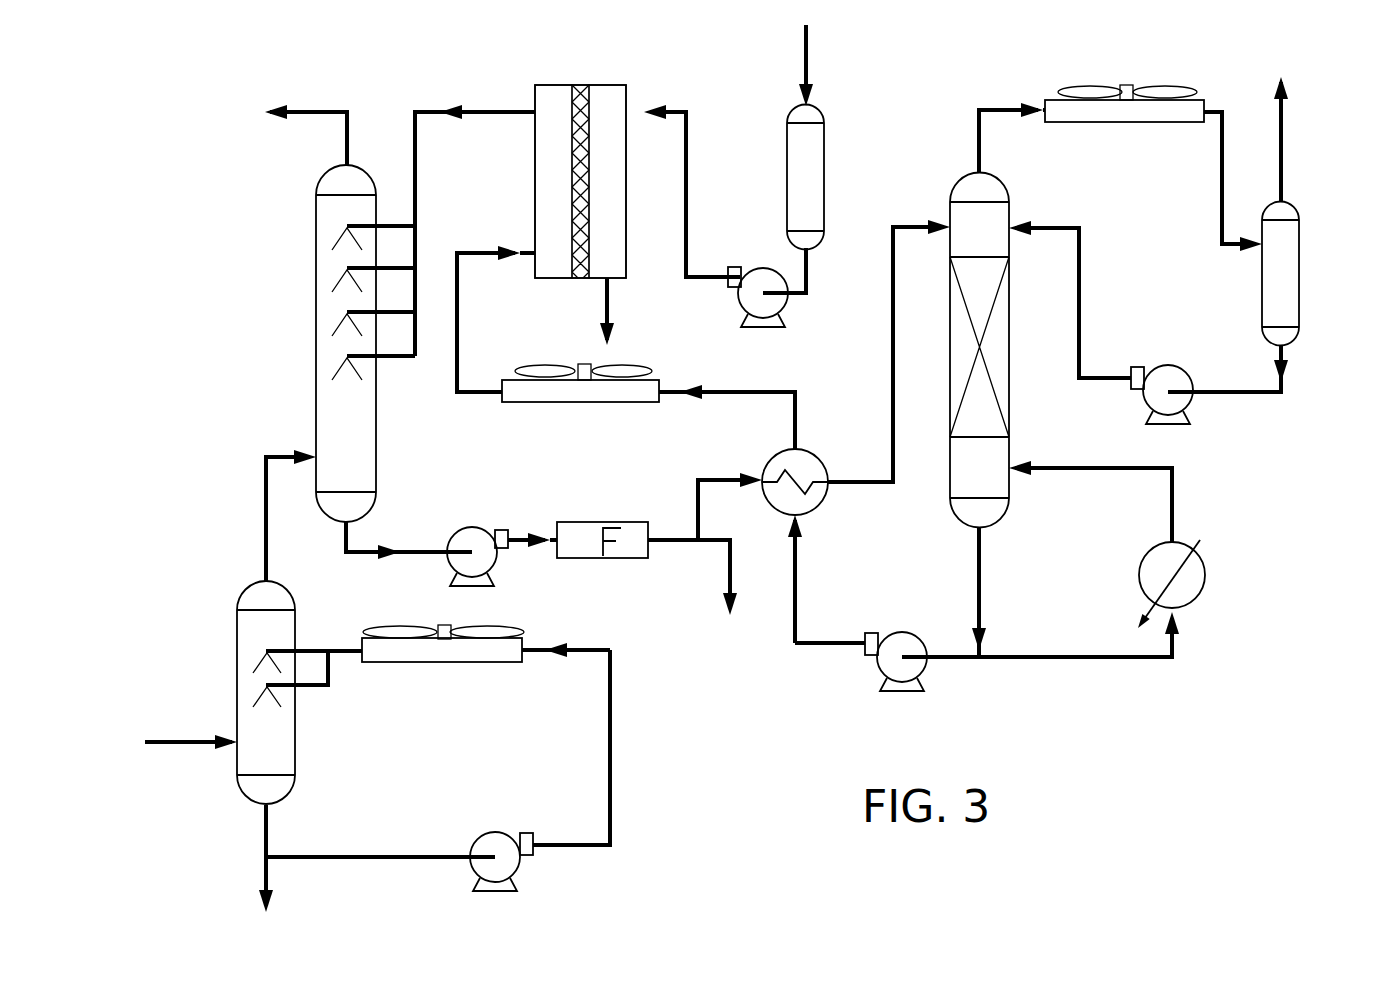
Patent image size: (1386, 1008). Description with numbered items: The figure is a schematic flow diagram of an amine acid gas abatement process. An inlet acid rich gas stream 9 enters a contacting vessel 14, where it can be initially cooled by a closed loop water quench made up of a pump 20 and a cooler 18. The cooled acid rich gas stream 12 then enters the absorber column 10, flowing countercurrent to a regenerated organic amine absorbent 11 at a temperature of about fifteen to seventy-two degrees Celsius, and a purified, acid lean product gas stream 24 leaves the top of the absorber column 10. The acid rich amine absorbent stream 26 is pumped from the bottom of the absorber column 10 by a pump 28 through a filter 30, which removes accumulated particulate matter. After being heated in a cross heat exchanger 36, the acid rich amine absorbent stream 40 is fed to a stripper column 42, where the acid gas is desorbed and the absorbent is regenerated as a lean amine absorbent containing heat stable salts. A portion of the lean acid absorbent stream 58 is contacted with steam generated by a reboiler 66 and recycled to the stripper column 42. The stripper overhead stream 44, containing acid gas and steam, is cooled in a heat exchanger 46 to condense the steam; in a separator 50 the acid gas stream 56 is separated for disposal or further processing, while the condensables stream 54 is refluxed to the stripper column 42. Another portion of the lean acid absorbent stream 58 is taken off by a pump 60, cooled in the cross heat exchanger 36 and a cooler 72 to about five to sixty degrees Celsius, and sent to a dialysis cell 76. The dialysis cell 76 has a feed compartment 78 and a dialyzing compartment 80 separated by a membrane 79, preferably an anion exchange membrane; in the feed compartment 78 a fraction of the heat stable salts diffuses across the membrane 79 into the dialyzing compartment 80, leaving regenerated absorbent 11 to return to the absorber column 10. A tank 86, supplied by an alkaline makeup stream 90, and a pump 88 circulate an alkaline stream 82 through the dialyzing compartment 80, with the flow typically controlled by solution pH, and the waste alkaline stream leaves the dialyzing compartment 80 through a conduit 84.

The inlet acid rich gas stream 9 is at (158, 738).
The absorber column 10 is at (315, 295).
The regenerated organic amine absorbent 11 is at (487, 110).
The acid rich gas stream 12 is at (267, 510).
The contacting vessel 14 is at (288, 737).
The cooler 18 is at (443, 663).
The pump 20 is at (490, 832).
The acid lean product gas stream 24 is at (330, 110).
The acid rich amine absorbent stream 26 is at (393, 538).
The pump 28 is at (468, 528).
The filter 30 is at (622, 560).
The cross heat exchanger 36 is at (770, 458).
The acid rich amine absorbent stream 40 is at (892, 272).
The stripper column 42 is at (956, 372).
The stripper overhead stream 44 is at (983, 133).
The heat exchanger 46 is at (1165, 118).
The separator 50 is at (1302, 297).
The condensables stream 54 is at (1078, 297).
The acid gas stream 56 is at (1285, 170).
The lean acid absorbent stream 58 is at (982, 550).
The pump 60 is at (878, 668).
The reboiler 66 is at (1205, 588).
The cooler 72 is at (620, 398).
The dialysis cell 76 is at (572, 71).
The feed compartment 78 is at (552, 159).
The membrane 79 is at (572, 210).
The dialyzing compartment 80 is at (608, 207).
The stream 82 is at (668, 108).
The conduit 84 is at (607, 297).
The tank 86 is at (818, 150).
The pump 88 is at (785, 302).
The alkaline makeup stream 90 is at (810, 52).